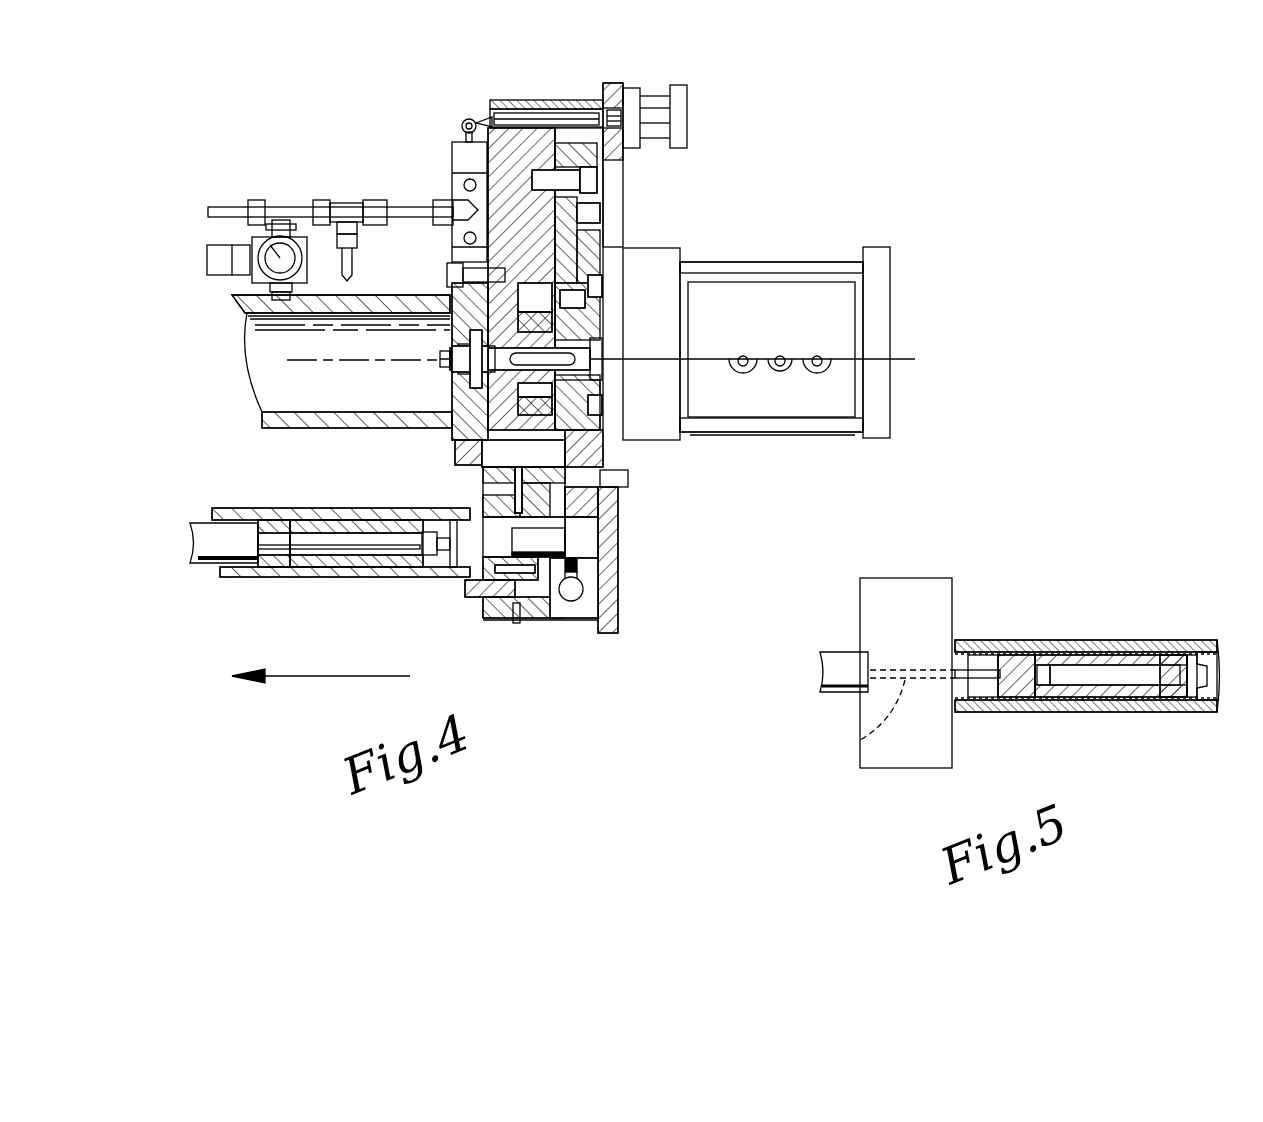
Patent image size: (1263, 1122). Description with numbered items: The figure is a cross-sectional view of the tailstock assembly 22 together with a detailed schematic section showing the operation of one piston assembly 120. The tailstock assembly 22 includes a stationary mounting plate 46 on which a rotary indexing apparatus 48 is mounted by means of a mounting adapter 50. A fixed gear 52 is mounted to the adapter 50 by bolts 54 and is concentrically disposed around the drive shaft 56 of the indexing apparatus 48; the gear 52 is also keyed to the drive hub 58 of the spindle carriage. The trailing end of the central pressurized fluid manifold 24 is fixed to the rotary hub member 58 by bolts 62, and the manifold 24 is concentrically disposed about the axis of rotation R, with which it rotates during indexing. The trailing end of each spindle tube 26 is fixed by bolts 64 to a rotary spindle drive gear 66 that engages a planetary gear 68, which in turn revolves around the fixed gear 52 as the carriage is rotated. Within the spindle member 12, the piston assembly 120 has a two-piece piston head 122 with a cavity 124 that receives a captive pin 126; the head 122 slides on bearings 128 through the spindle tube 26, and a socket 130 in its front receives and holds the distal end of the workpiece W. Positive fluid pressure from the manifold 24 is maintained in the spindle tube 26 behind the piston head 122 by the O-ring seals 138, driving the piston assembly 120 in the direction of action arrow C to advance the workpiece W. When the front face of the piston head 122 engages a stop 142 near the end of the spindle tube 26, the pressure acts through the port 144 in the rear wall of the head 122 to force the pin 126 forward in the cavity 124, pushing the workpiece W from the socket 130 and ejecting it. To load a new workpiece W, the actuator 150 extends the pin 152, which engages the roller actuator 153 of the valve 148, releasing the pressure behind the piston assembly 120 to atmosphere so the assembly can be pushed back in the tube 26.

In FIG. 5, the spindle member 12 is at (903, 610).
In FIG. 4, the tailstock assembly 22 is at (327, 185).
In FIG. 4, the central pressurized fluid manifold 24 is at (303, 418).
In FIG. 4, the spindle tube 26 is at (338, 578).
In FIG. 5, the spindle tube 26 is at (1205, 640).
In FIG. 4, the stationary mounting plate 46 is at (612, 570).
In FIG. 4, the rotary indexing apparatus 48 is at (763, 432).
In FIG. 4, the mounting adapter 50 is at (605, 452).
In FIG. 4, the fixed gear 52 is at (560, 300).
In FIG. 4, the bolts 54 is at (620, 345).
In FIG. 4, the drive shaft 56 is at (620, 300).
In FIG. 4, the drive hub 58 is at (456, 428).
In FIG. 4, the bolts 62 is at (450, 272).
In FIG. 4, the bolts 64 is at (552, 612).
In FIG. 4, the rotary spindle drive gear 66 is at (512, 628).
In FIG. 4, the planetary gear 68 is at (570, 490).
In FIG. 4, the piston assembly 120 is at (315, 551).
In FIG. 5, the piston assembly 120 is at (1195, 680).
In FIG. 5, the two-piece piston head 122 is at (1101, 666).
In FIG. 4, the cavity 124 is at (336, 535).
In FIG. 5, the cavity 124 is at (1100, 688).
In FIG. 4, the captive pin 126 is at (305, 532).
In FIG. 5, the captive pin 126 is at (855, 742).
In FIG. 5, the bearings 128 is at (1022, 692).
In FIG. 4, the socket 130 is at (233, 520).
In FIG. 5, the socket 130 is at (985, 688).
In FIG. 4, the O-ring seals 138 is at (458, 520).
In FIG. 5, the stop 142 is at (962, 645).
In FIG. 5, the port 144 is at (1185, 668).
In FIG. 4, the valve 148 is at (460, 188).
In FIG. 4, the actuator 150 is at (680, 108).
In FIG. 4, the pin 152 is at (512, 122).
In FIG. 4, the roller actuator 153 is at (462, 124).
In FIG. 4, the axis of rotation R is at (292, 360).
In FIG. 4, the workpiece W is at (213, 555).
In FIG. 5, the workpiece W is at (840, 660).
In FIG. 4, the action arrow C is at (340, 676).